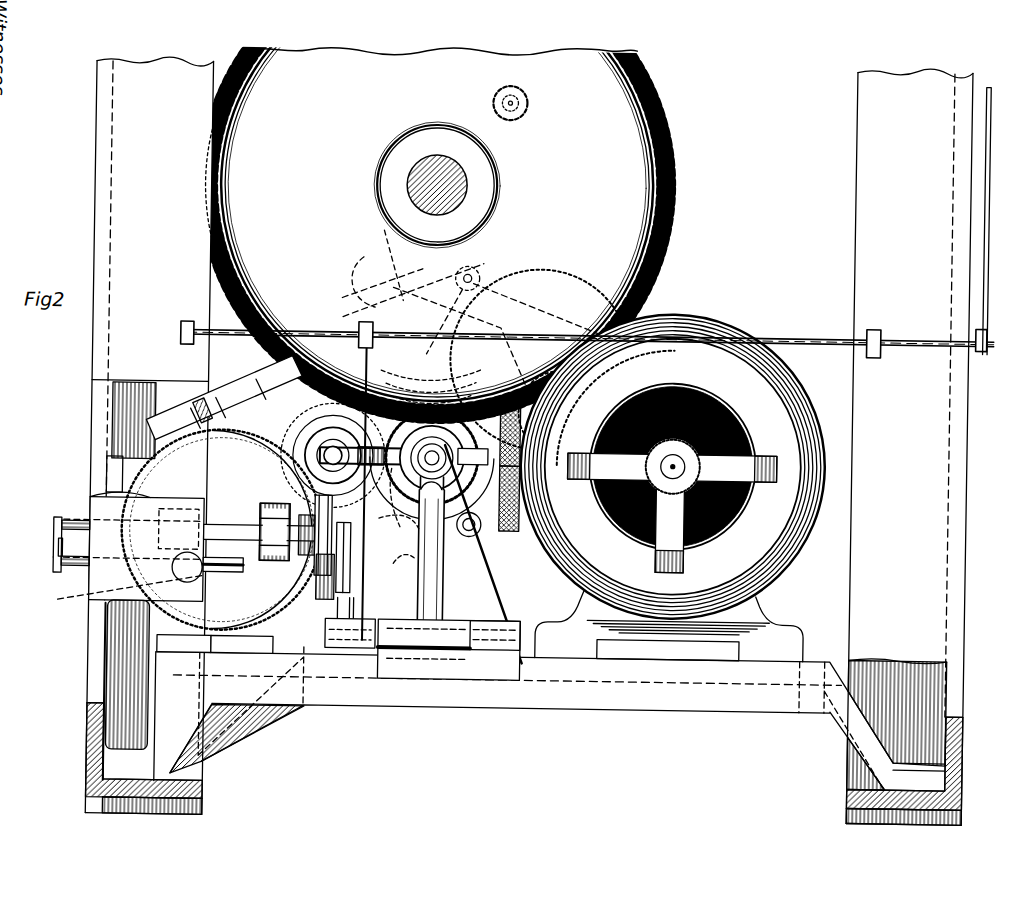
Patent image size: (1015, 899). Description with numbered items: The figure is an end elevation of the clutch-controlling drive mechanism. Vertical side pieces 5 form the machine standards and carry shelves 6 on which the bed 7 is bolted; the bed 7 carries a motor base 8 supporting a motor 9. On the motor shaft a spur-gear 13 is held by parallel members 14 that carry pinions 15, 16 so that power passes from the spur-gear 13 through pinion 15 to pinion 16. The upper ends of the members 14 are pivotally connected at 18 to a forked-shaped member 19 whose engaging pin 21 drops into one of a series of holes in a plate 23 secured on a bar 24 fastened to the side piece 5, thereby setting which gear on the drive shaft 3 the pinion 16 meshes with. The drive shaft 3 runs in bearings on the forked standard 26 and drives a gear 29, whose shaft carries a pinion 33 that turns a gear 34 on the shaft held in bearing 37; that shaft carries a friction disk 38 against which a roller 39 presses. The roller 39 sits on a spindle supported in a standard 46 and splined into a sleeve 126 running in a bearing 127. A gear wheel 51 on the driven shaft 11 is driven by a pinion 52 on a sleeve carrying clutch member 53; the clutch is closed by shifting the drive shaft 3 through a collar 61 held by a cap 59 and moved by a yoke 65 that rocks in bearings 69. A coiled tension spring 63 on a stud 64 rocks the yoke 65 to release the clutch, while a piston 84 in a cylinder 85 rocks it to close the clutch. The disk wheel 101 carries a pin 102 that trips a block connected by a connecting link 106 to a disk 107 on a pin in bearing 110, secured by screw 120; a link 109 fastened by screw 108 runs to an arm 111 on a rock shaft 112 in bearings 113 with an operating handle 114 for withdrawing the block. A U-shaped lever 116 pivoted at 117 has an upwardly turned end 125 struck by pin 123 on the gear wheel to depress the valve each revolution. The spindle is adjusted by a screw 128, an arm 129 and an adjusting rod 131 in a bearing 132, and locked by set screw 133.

The drive shaft 3 is at (371, 403).
The vertical side pieces 5 is at (851, 206).
The shelves 6 is at (206, 792).
The bed 7 is at (461, 710).
The motor base 8 is at (776, 632).
The motor 9 is at (800, 402).
The driven shaft 11 is at (452, 190).
The spur-gear 13 is at (748, 426).
The parallel members 14 is at (521, 458).
The pinion 15 is at (655, 382).
The pinion 16 is at (552, 282).
The pivotal connection 18 is at (477, 270).
The forked-shaped member 19 is at (236, 392).
The engaging pin 21 is at (210, 490).
The plate 23 is at (134, 420).
The bar 24 is at (106, 480).
The forked standard 26 is at (507, 578).
The gear 29 is at (300, 448).
The pinion 33 is at (300, 566).
The gear 34 is at (126, 690).
The bearing 37 is at (262, 657).
The friction disk 38 is at (233, 445).
The roller 39 is at (274, 506).
The standard 46 is at (180, 515).
The gear wheel 51 is at (437, 209).
The pinion 52 is at (616, 408).
The clutch member 53 is at (523, 490).
The cap 59 is at (438, 450).
The collar 61 is at (304, 527).
The coiled tension spring 63 is at (484, 528).
The stud 64 is at (448, 498).
The yoke 65 is at (446, 592).
The bearings 69 is at (470, 650).
The piston 84 is at (305, 428).
The cylinder 85 is at (327, 432).
The disk wheel 101 is at (315, 506).
The pin 102 is at (336, 575).
The connecting link 106 is at (340, 625).
The disk 107 is at (350, 633).
The screw 108 is at (372, 586).
The link 109 is at (423, 378).
The bearing 110 is at (328, 603).
The arm 111 is at (356, 330).
The rock shaft 112 is at (910, 343).
The bearings 113 is at (185, 326).
The operating handle 114 is at (980, 208).
The U-shaped lever 116 is at (435, 316).
The pivot 117 is at (557, 399).
The screw 120 is at (270, 580).
The pin 123 is at (521, 97).
The upwardly turned end 125 is at (378, 222).
The sleeve 126 is at (393, 498).
The bearing 127 is at (399, 527).
The screw 128 is at (56, 532).
The arm 129 is at (62, 562).
The adjusting rod 131 is at (60, 575).
The bearing 132 is at (80, 606).
The set screw 133 is at (180, 580).